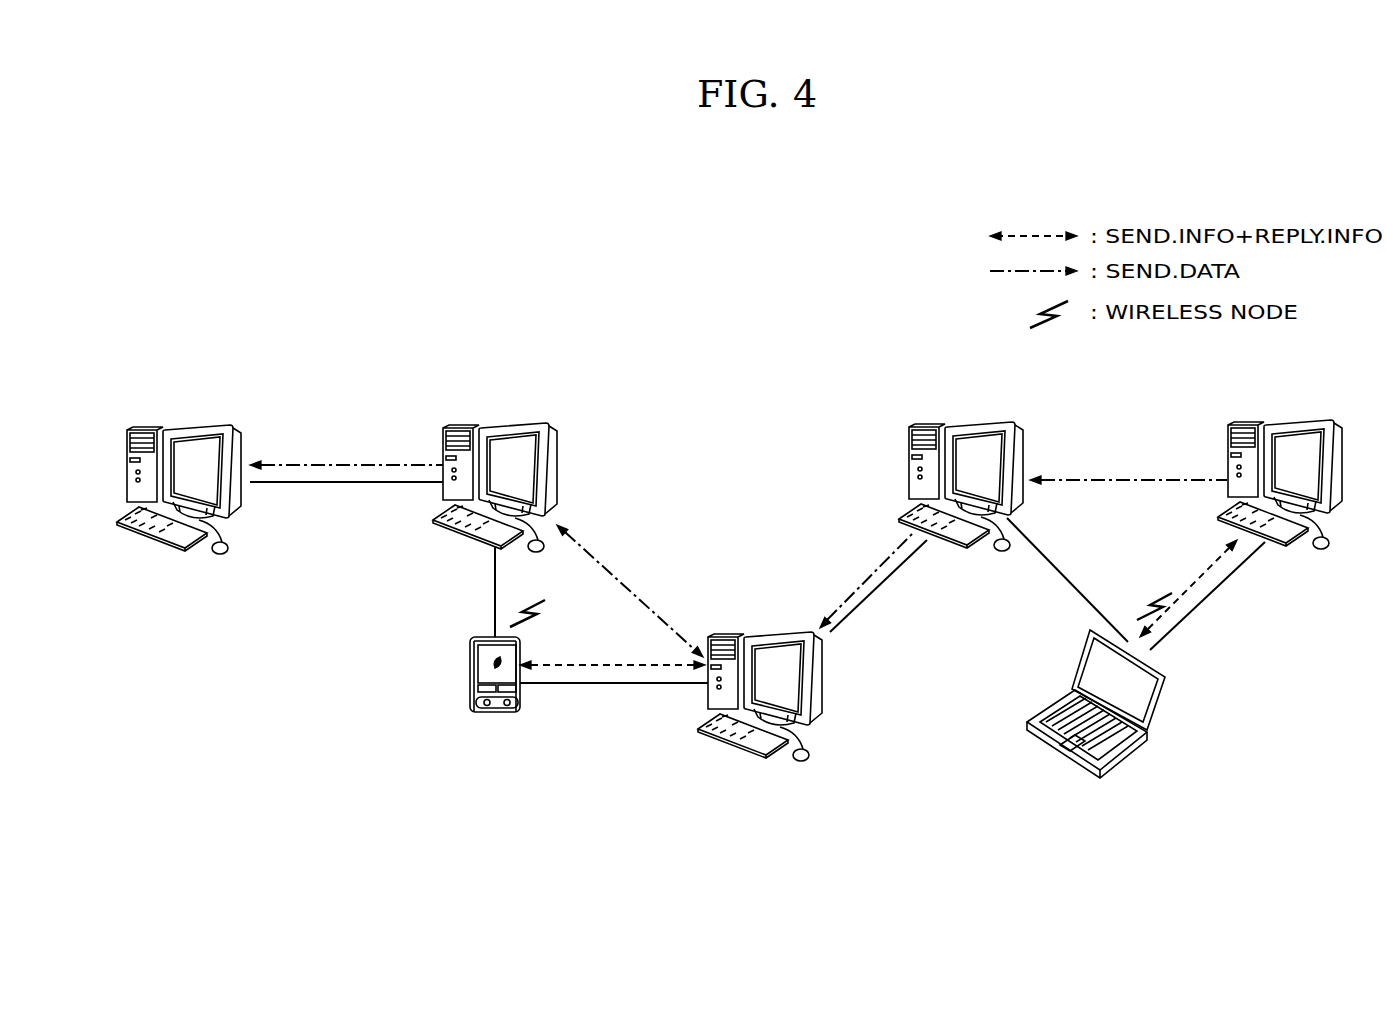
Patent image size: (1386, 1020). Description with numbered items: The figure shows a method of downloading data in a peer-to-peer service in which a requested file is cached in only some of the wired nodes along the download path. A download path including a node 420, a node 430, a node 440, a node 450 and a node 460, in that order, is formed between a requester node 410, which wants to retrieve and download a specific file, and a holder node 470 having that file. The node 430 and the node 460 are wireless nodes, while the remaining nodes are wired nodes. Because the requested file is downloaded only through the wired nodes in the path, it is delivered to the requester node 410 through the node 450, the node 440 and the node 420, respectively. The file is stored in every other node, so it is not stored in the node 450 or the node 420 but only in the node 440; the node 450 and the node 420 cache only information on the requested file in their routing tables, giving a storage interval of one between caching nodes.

The requester node 410 is at (200, 427).
The node 420 is at (516, 425).
The node 430 is at (472, 676).
The node 440 is at (783, 634).
The node 450 is at (984, 424).
The node 460 is at (1080, 663).
The holder node 470 is at (1300, 422).